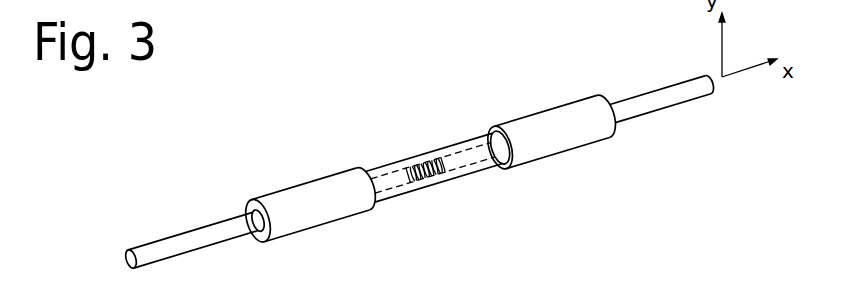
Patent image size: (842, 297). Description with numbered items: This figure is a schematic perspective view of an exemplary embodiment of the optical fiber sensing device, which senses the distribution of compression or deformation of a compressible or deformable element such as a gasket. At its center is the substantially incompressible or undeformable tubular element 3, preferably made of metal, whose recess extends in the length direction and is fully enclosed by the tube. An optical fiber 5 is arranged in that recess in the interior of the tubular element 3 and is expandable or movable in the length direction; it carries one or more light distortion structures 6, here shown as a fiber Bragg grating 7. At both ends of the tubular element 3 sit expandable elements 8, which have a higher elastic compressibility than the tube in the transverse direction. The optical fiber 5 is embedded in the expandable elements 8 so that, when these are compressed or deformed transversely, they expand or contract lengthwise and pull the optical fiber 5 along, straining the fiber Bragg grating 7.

The tubular element 3 is at (435, 180).
The optical fiber 5 is at (182, 242).
The light distortion structure 6 is at (419, 133).
The fiber Bragg grating 7 is at (428, 155).
The expandable element 8 is at (313, 207).